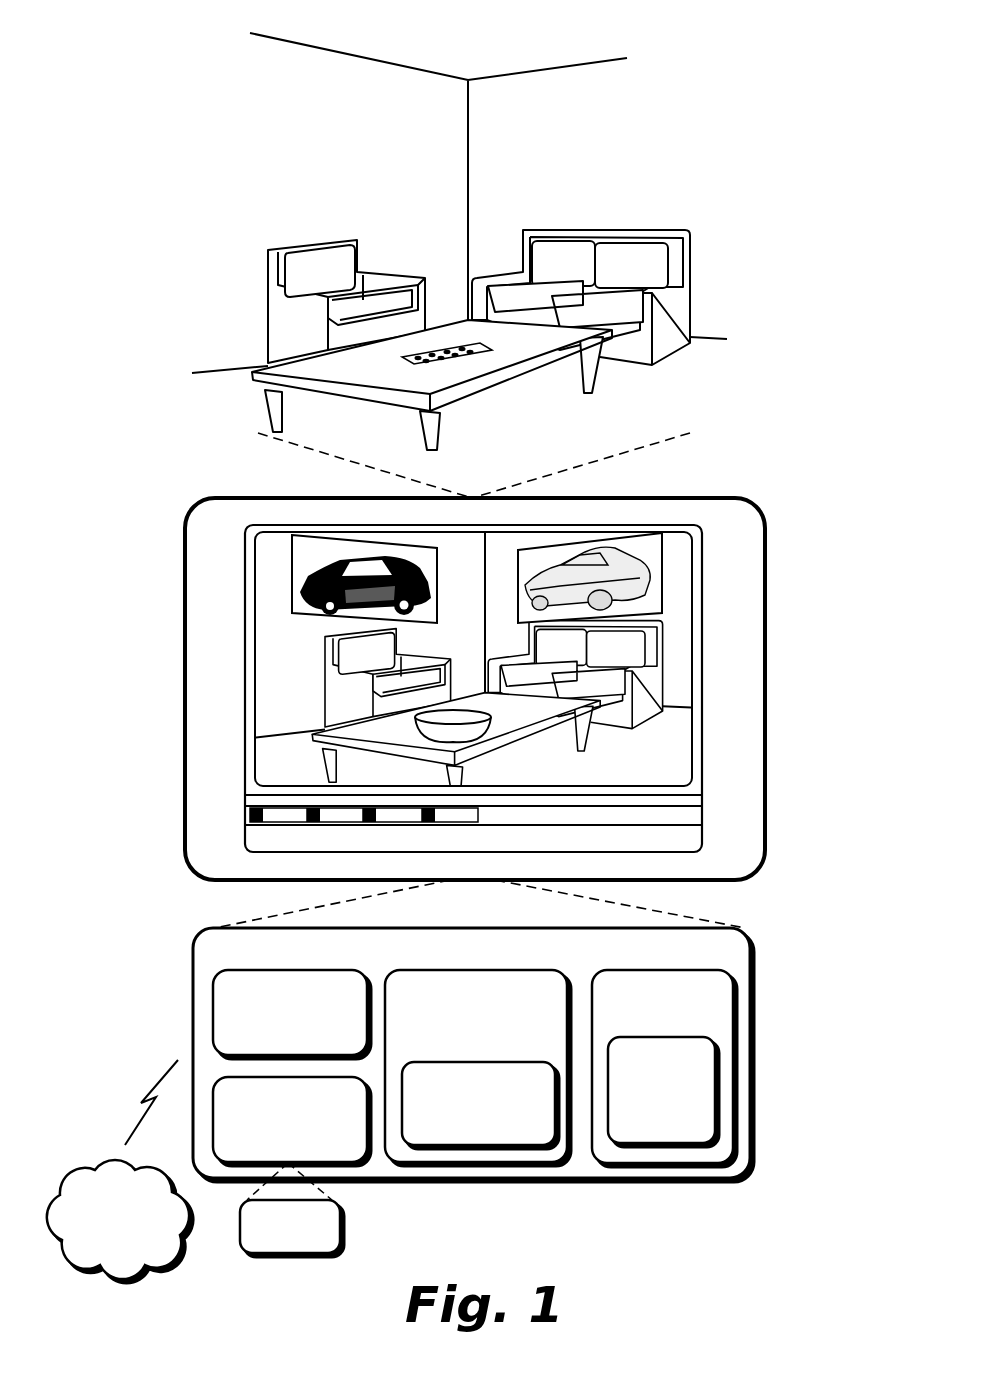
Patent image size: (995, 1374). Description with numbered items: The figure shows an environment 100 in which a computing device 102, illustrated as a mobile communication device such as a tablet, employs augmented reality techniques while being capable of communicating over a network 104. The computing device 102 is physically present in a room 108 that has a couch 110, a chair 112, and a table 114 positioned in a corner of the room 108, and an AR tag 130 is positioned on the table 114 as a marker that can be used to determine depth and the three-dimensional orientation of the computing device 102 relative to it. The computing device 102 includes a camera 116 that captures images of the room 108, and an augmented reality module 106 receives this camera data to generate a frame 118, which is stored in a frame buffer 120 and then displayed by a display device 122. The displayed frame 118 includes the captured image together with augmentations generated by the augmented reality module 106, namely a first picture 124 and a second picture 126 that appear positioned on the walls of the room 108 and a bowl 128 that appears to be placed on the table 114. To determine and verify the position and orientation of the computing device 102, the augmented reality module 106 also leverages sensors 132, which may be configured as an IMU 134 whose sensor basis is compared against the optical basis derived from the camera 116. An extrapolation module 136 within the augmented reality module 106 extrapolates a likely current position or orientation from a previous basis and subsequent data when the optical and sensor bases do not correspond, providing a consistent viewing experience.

The environment 100 is at (185, 72).
The computing device 102 is at (473, 1055).
The network 104 is at (120, 1171).
The augmented reality module 106 is at (478, 1068).
The room 108 is at (668, 146).
The couch 110 is at (690, 231).
The chair 112 is at (355, 241).
The table 114 is at (392, 412).
The camera 116 is at (292, 1014).
The frame 118 is at (663, 1092).
The frame buffer 120 is at (664, 1068).
The display device 122 is at (681, 777).
The first picture 124 is at (330, 535).
The second picture 126 is at (632, 532).
The bowl 128 is at (488, 728).
The AR tag 130 is at (493, 348).
The sensors 132 is at (292, 1121).
The IMU 134 is at (292, 1210).
The extrapolation module 136 is at (480, 1105).